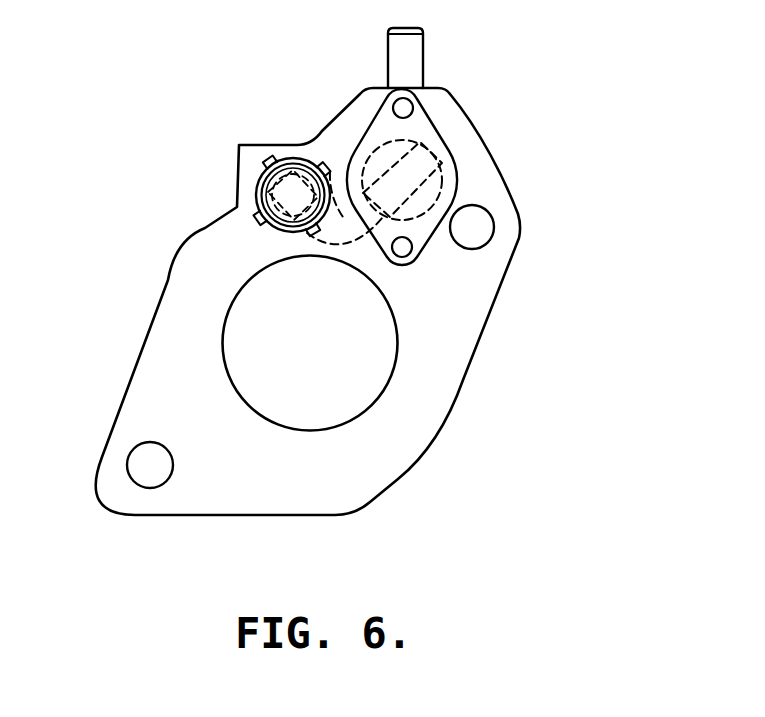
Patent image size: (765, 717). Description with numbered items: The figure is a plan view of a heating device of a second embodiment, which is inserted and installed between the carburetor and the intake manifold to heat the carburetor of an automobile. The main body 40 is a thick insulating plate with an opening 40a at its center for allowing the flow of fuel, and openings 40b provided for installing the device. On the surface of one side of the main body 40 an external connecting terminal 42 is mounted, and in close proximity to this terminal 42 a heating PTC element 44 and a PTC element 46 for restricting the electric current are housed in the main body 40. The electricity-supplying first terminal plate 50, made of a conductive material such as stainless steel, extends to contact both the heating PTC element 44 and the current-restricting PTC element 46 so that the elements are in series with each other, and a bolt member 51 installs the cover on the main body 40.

The main body 40 is at (166, 276).
The opening 40a is at (380, 390).
The openings 40b is at (488, 234).
The external connecting terminal 42 is at (421, 47).
The heating PTC element 44 is at (268, 187).
The PTC element for restricting the electric current 46 is at (443, 180).
The first terminal plate 50 is at (366, 148).
The bolt member 51 is at (400, 107).